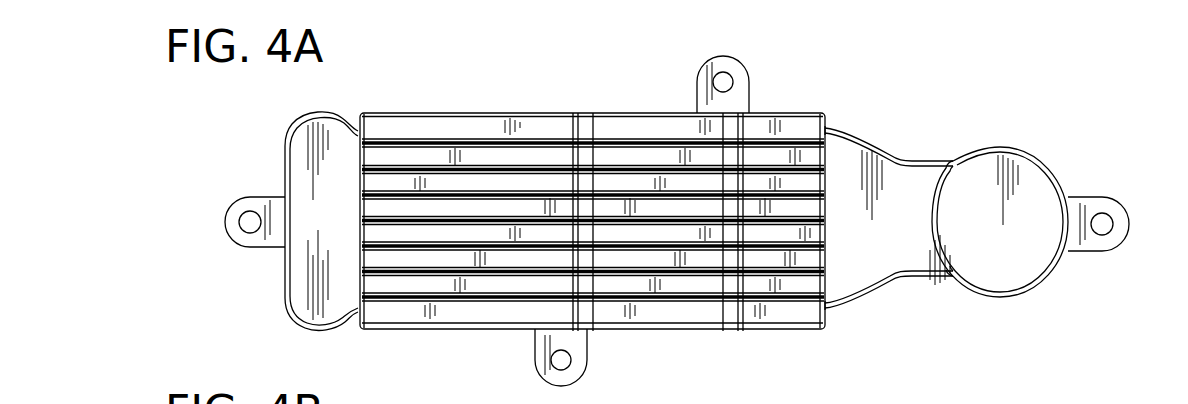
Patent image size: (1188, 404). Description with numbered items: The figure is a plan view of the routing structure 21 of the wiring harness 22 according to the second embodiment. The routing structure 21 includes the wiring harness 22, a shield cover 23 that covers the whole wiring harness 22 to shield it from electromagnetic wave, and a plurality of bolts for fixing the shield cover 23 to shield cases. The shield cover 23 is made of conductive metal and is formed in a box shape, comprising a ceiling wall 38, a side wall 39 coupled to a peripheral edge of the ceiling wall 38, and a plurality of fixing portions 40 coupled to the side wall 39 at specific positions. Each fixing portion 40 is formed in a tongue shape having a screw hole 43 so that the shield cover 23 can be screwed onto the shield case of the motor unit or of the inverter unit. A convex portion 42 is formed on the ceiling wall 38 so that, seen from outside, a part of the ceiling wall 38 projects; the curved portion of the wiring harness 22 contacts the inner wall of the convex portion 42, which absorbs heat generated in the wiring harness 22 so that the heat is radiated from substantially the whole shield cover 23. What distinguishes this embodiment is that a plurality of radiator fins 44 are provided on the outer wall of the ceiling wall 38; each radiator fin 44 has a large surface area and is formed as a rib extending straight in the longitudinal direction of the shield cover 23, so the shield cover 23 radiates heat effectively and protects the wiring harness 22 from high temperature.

The routing structure 21 is at (946, 177).
The wiring harness 22 is at (932, 205).
The shield cover 23 is at (899, 150).
The ceiling wall 38 is at (477, 127).
The side wall 39 is at (767, 333).
The fixing portion 40 is at (270, 198).
The convex portion 42 is at (698, 310).
The screw hole 43 is at (250, 224).
The radiator fin 44 is at (536, 142).